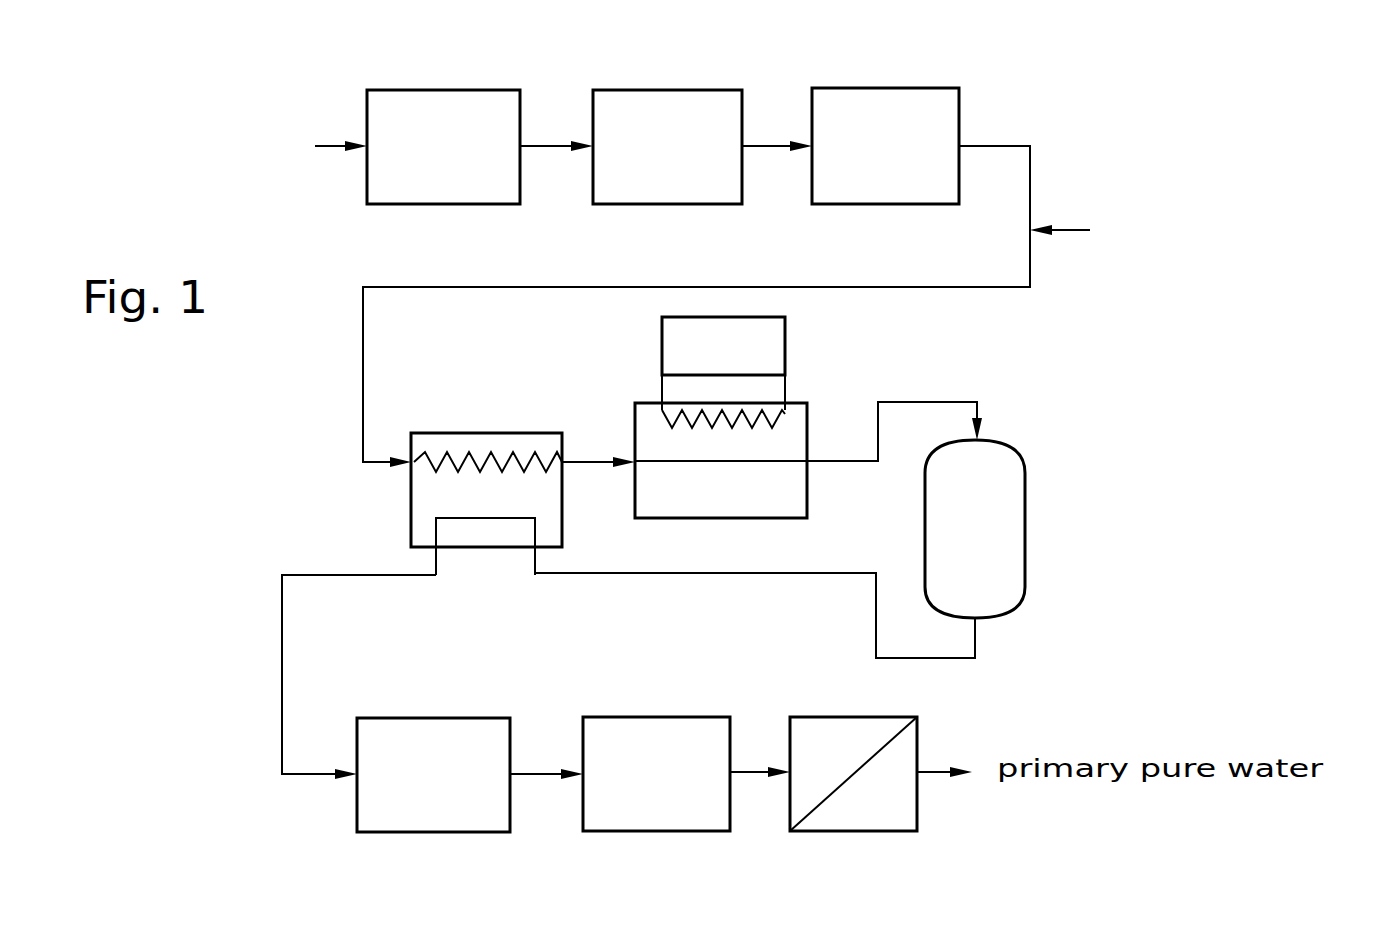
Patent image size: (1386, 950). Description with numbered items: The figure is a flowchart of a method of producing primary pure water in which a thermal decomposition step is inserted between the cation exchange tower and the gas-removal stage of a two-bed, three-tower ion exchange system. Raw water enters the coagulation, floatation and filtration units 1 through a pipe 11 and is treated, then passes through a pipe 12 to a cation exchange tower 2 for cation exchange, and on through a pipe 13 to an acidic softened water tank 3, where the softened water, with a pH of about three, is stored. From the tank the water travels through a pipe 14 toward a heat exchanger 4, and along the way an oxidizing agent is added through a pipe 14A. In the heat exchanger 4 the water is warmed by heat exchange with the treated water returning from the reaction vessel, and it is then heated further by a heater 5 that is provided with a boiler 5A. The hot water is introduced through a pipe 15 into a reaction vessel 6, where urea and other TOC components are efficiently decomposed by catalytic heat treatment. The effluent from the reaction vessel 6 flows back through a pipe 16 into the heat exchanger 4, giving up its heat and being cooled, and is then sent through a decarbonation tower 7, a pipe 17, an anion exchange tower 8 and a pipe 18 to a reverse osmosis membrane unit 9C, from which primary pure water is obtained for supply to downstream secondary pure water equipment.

The coagulation, floatation and filtration units 1 is at (472, 90).
The cation exchange tower 2 is at (690, 90).
The acidic softened water tank 3 is at (910, 88).
The heat exchanger 4 is at (510, 433).
The heater 5 is at (807, 428).
The boiler 5A is at (662, 333).
The reaction vessel 6 is at (1025, 510).
The decarbonation tower 7 is at (430, 672).
The anion exchange tower 8 is at (657, 831).
The reverse osmosis membrane unit 9C is at (848, 831).
The pipe 11 is at (328, 146).
The pipe 12 is at (555, 146).
The pipe 13 is at (777, 146).
The pipe 14 is at (993, 287).
The pipe 14A is at (1068, 230).
The pipe 15 is at (860, 462).
The pipe 16 is at (645, 575).
The pipe 17 is at (545, 774).
The pipe 18 is at (758, 772).